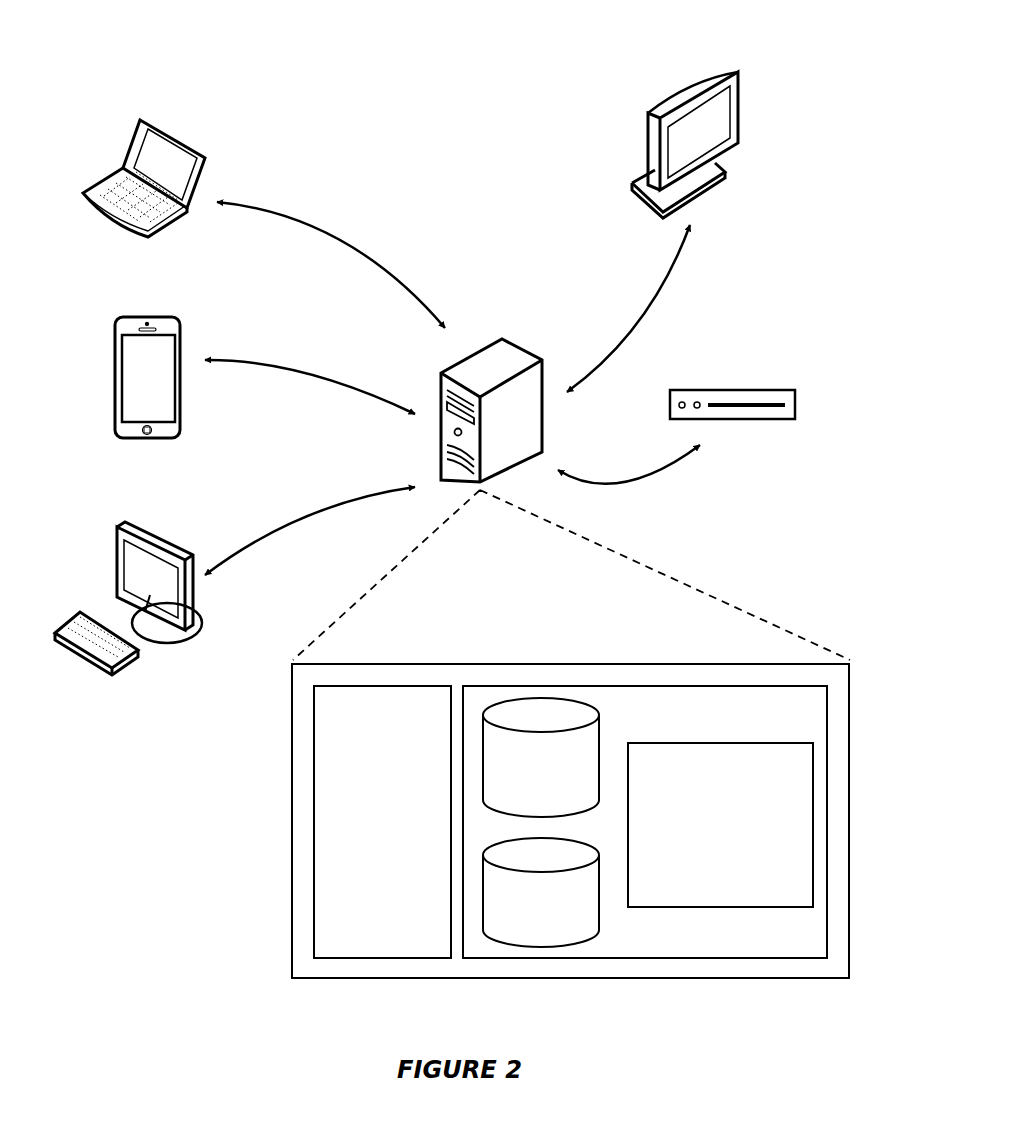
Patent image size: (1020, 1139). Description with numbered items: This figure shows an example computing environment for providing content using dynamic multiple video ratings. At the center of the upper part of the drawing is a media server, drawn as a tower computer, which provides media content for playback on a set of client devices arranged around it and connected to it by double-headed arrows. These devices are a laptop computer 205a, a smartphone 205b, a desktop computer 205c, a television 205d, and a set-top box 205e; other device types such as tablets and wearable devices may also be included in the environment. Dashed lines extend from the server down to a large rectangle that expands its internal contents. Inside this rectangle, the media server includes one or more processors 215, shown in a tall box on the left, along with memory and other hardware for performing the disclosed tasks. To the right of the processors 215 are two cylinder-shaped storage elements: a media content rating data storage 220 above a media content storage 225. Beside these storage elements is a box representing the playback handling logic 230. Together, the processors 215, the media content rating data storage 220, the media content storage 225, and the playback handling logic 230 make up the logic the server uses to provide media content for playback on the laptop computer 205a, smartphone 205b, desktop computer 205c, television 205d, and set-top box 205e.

The laptop computer 205a is at (168, 130).
The smartphone 205b is at (147, 317).
The desktop computer 205c is at (155, 535).
The television 205d is at (702, 72).
The set-top box 205e is at (760, 390).
The processors 215 is at (382, 822).
The media content rating data storage 220 is at (541, 757).
The media content storage 225 is at (541, 892).
The playback handling logic 230 is at (720, 825).